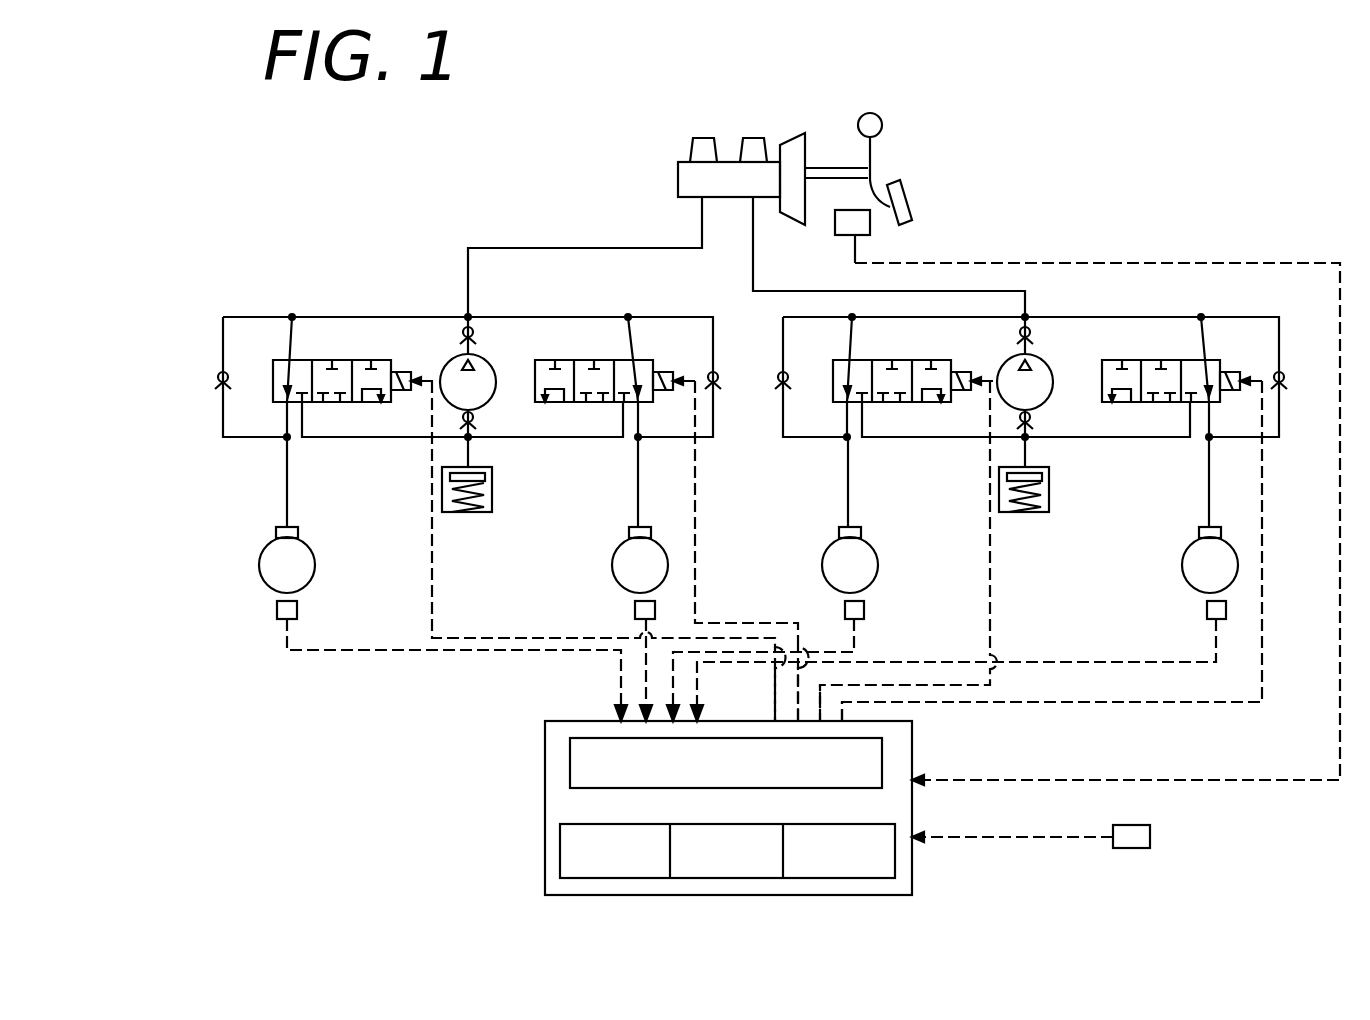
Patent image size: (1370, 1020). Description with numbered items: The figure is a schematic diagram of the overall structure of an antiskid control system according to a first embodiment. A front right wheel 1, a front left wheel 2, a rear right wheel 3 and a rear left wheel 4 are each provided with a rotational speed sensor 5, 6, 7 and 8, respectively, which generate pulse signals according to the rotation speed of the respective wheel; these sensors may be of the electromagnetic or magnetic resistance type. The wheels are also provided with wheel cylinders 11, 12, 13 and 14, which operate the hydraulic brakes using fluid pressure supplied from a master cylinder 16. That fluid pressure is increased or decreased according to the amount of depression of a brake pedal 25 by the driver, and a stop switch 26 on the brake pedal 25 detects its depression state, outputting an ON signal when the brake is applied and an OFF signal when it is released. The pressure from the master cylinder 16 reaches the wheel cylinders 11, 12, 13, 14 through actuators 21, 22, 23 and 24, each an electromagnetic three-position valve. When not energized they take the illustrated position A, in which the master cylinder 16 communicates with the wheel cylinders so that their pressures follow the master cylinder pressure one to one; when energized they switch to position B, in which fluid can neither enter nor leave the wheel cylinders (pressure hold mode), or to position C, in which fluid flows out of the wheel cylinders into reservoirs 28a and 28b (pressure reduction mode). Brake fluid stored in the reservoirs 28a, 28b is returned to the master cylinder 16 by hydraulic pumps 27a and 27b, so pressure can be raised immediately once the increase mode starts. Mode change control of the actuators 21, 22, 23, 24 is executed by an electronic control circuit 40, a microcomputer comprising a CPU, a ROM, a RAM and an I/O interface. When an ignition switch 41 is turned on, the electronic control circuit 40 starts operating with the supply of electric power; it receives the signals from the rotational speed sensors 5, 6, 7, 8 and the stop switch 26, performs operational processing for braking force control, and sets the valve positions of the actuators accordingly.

The front right wheel 1 is at (260, 570).
The front left wheel 2 is at (613, 570).
The rear right wheel 3 is at (823, 570).
The rear left wheel 4 is at (1183, 570).
The rotational speed sensor 5 is at (298, 612).
The rotational speed sensor 6 is at (635, 612).
The rotational speed sensor 7 is at (865, 612).
The rotational speed sensor 8 is at (1207, 612).
The wheel cylinder 11 is at (296, 528).
The wheel cylinder 12 is at (634, 528).
The wheel cylinder 13 is at (842, 528).
The wheel cylinder 14 is at (1202, 528).
The master cylinder 16 is at (678, 184).
The actuator 21 is at (370, 403).
The actuator 22 is at (568, 403).
The actuator 23 is at (897, 403).
The actuator 24 is at (1135, 403).
The brake pedal 25 is at (898, 185).
The stop switch 26 is at (835, 225).
The hydraulic pump 27a is at (490, 378).
The hydraulic pump 27b is at (1048, 378).
The reservoir 28a is at (492, 492).
The reservoir 28b is at (1049, 492).
The electronic control circuit 40 is at (912, 752).
The ignition switch 41 is at (1150, 838).